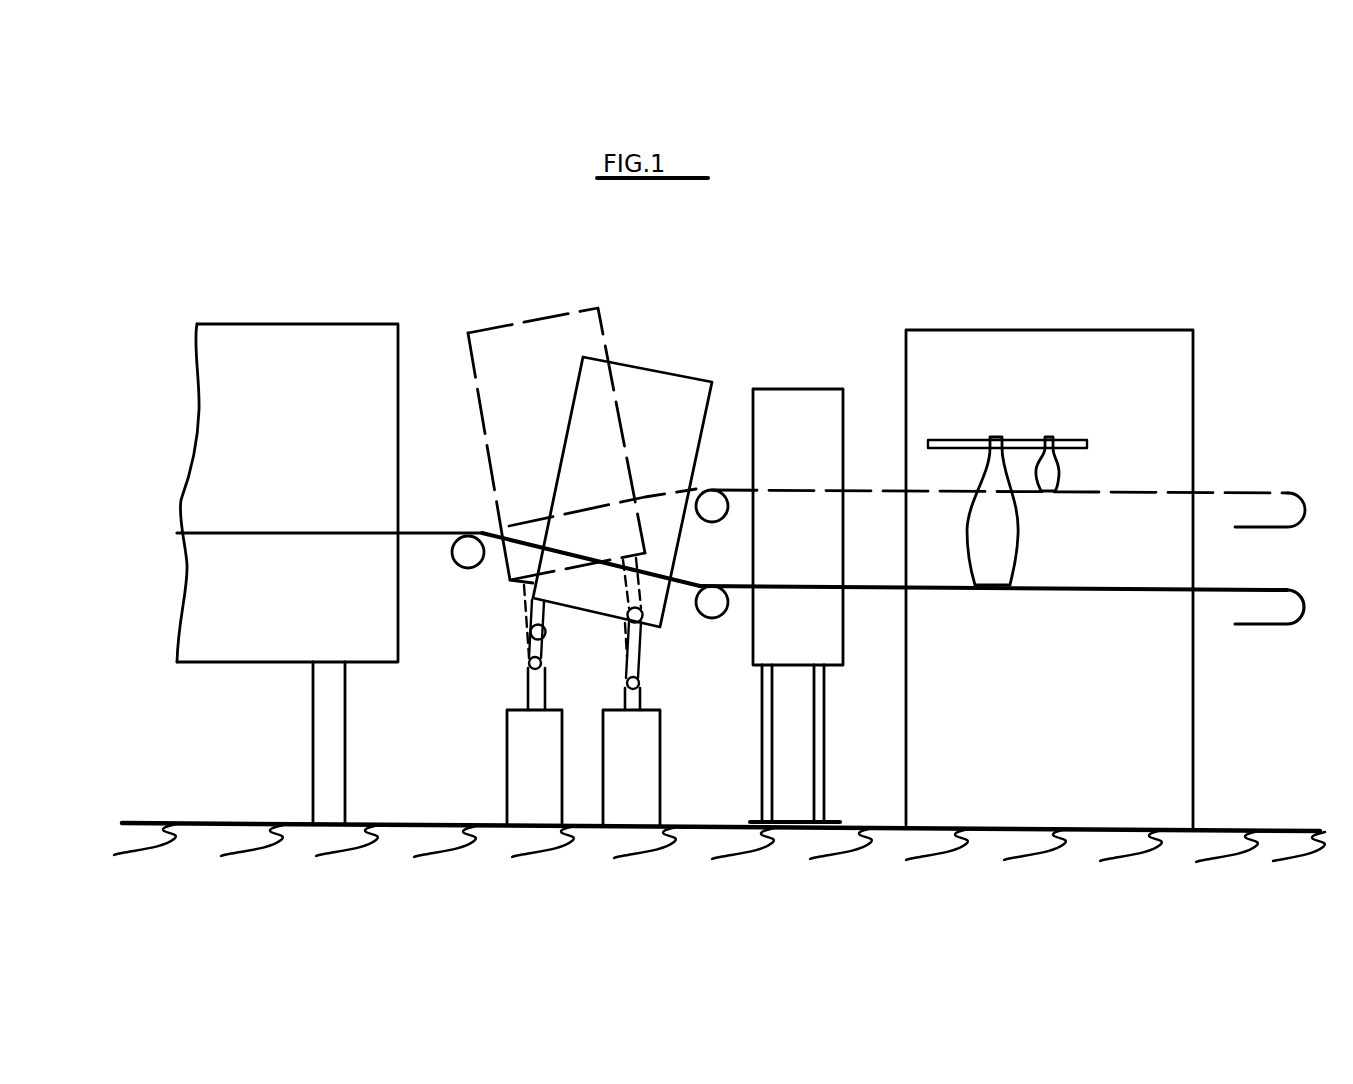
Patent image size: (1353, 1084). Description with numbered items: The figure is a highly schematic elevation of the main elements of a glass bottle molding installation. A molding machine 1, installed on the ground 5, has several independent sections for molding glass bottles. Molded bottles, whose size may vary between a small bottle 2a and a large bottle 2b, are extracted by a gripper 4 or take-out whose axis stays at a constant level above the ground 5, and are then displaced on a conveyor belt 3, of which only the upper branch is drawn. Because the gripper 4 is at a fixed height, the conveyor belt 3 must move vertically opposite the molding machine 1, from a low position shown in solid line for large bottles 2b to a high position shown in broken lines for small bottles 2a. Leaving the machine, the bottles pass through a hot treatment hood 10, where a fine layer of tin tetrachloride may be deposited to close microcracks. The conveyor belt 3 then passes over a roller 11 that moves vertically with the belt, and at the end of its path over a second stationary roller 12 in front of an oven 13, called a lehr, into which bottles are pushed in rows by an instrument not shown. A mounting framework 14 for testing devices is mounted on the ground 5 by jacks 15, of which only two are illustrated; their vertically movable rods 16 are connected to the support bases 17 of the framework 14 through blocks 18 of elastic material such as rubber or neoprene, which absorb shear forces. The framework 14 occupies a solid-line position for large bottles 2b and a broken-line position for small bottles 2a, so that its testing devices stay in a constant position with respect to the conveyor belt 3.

The molding machine 1 is at (1108, 320).
The small bottle 2a is at (1050, 474).
The large bottle 2b is at (996, 548).
The conveyor belt 3 is at (1097, 585).
The gripper 4 is at (1020, 440).
The ground 5 is at (1268, 831).
The hot treatment hood 10 is at (800, 378).
The roller 11 is at (712, 606).
The second stationary roller 12 is at (468, 550).
The oven (lehr) 13 is at (284, 318).
The mounting framework 14 is at (652, 362).
The jacks 15 is at (530, 762).
The rods 16 is at (528, 688).
The support bases 17 is at (530, 622).
The blocks 18 is at (529, 664).